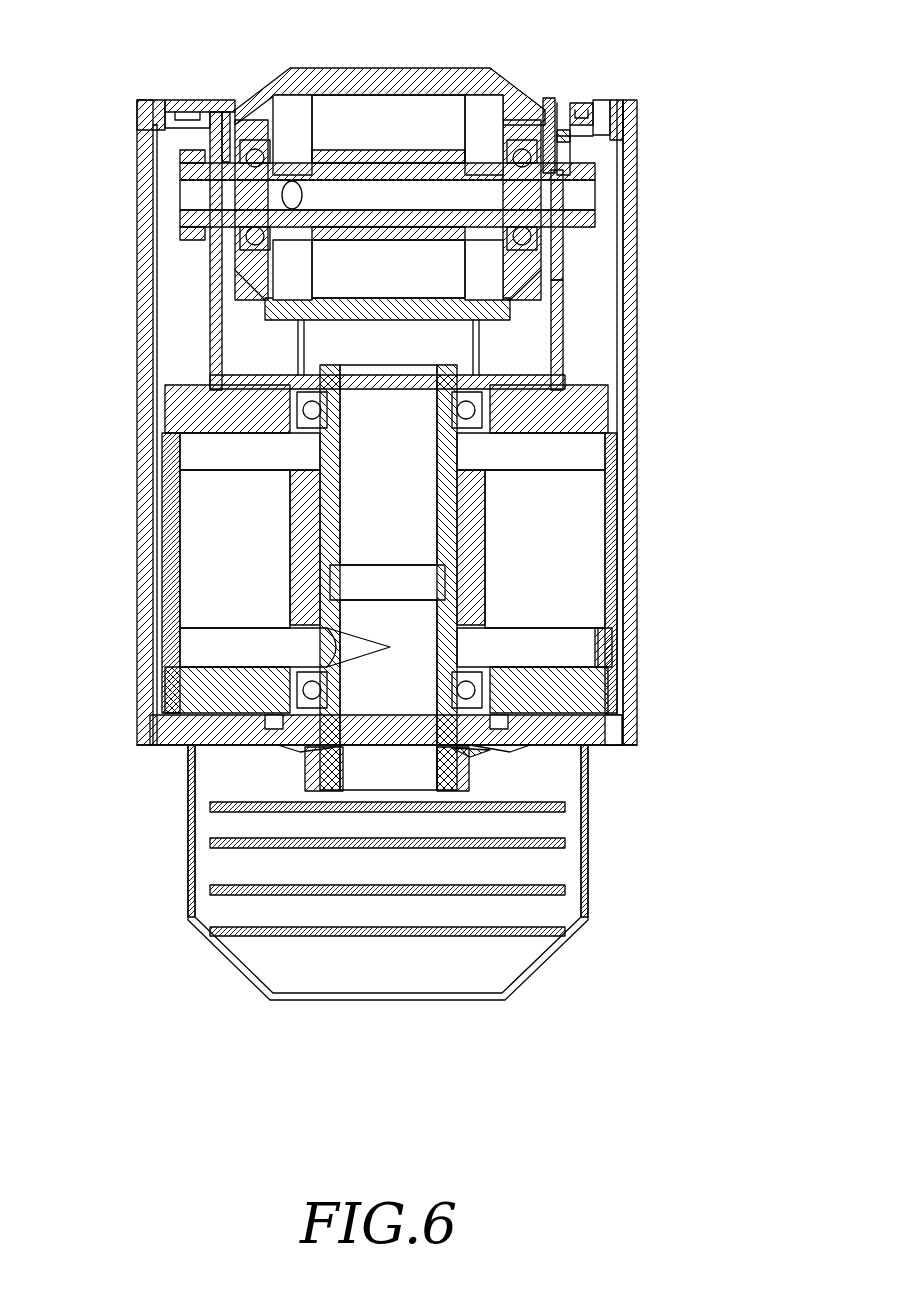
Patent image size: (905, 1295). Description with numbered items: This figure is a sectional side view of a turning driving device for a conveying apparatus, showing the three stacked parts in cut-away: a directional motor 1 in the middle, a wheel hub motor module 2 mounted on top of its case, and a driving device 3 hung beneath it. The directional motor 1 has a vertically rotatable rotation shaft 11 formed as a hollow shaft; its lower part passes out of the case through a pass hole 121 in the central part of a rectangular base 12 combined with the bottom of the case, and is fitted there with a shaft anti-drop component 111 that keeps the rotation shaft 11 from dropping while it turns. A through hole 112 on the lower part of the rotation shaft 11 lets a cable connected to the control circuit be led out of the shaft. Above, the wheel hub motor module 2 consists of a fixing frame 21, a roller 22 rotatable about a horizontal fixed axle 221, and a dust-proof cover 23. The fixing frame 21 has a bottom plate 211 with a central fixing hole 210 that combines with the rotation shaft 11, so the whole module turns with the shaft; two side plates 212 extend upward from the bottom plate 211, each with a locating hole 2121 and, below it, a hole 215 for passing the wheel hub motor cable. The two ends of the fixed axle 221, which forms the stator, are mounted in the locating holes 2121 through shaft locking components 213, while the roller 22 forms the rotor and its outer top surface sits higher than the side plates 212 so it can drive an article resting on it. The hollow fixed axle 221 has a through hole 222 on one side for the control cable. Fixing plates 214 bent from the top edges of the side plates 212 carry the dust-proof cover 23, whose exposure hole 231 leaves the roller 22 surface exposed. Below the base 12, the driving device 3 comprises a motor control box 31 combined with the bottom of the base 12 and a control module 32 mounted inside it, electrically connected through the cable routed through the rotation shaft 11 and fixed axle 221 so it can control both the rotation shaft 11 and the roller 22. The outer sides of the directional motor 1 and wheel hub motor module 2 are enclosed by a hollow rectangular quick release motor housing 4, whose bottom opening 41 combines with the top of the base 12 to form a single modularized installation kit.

The directional motor 1 is at (170, 432).
The rotation shaft 11 is at (470, 528).
The shaft anti-drop component 111 is at (320, 773).
The through hole 112 is at (480, 641).
The base 12 is at (600, 733).
The pass hole 121 is at (535, 748).
The wheel hub motor module 2 is at (430, 28).
The fixing frame 21 is at (206, 272).
The fixing hole 210 is at (325, 368).
The bottom plate 211 is at (270, 383).
The side plate 212 is at (563, 288).
The locating hole 2121 is at (572, 138).
The shaft locking component 213 is at (590, 168).
The fixing plate 214 is at (172, 108).
The hole 215 is at (563, 345).
The roller 22 is at (393, 92).
The fixed axle 221 is at (358, 190).
The through hole 222 is at (290, 186).
The dust-proof cover 23 is at (590, 102).
The exposure hole 231 is at (547, 98).
The driving device 3 is at (185, 853).
The motor control box 31 is at (588, 827).
The control module 32 is at (560, 853).
The quick release motor housing 4 is at (140, 492).
The opening 41 is at (165, 688).